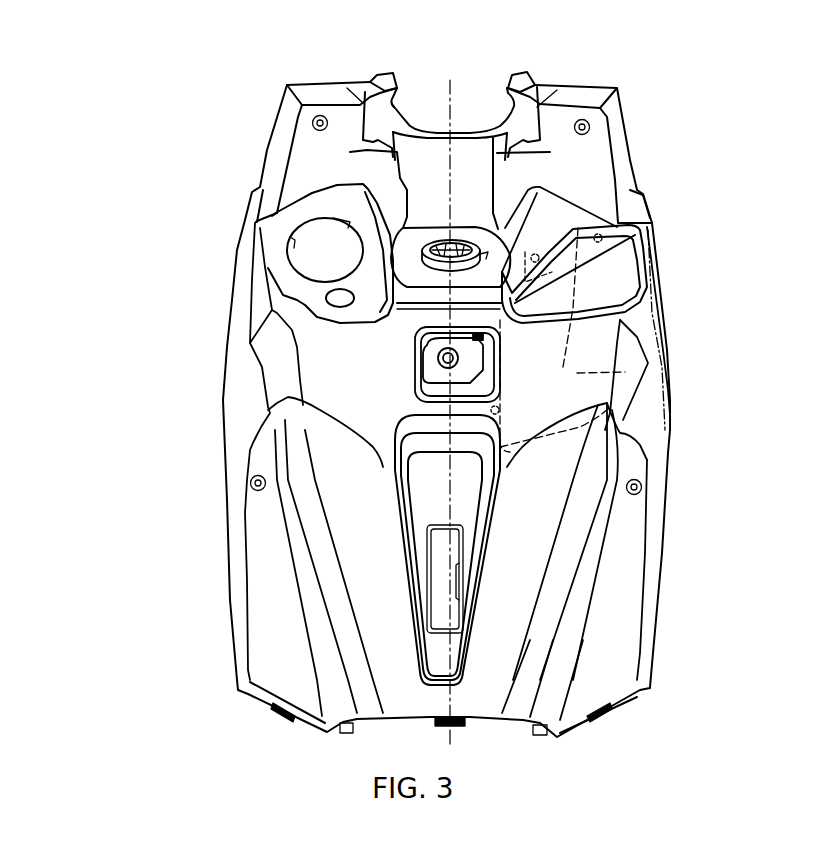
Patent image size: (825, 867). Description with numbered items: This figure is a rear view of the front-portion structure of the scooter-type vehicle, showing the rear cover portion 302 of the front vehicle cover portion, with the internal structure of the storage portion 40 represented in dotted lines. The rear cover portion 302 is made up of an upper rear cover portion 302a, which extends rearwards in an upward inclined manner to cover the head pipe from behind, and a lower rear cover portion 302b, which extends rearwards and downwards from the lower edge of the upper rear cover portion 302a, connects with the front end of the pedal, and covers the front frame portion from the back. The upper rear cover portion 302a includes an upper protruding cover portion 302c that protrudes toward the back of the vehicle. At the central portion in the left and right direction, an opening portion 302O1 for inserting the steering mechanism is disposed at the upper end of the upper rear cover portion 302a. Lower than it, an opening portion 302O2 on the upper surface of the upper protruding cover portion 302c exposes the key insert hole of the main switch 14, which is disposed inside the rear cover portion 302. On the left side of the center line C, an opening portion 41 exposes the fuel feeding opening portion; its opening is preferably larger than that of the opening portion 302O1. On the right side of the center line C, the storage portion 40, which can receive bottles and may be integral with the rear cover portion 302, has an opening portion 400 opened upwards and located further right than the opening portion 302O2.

The rear cover portion 302 is at (697, 453).
The upper rear cover portion 302a is at (206, 331).
The lower rear cover portion 302b is at (340, 545).
The upper protruding cover portion 302c is at (313, 370).
The opening portion 302O1 is at (430, 100).
The opening portion 302O2 is at (468, 248).
The main switch 14 is at (482, 262).
The opening portion 41 is at (312, 265).
The storage portion 40 is at (577, 372).
The opening portion 400 is at (590, 286).
The center line C is at (448, 399).